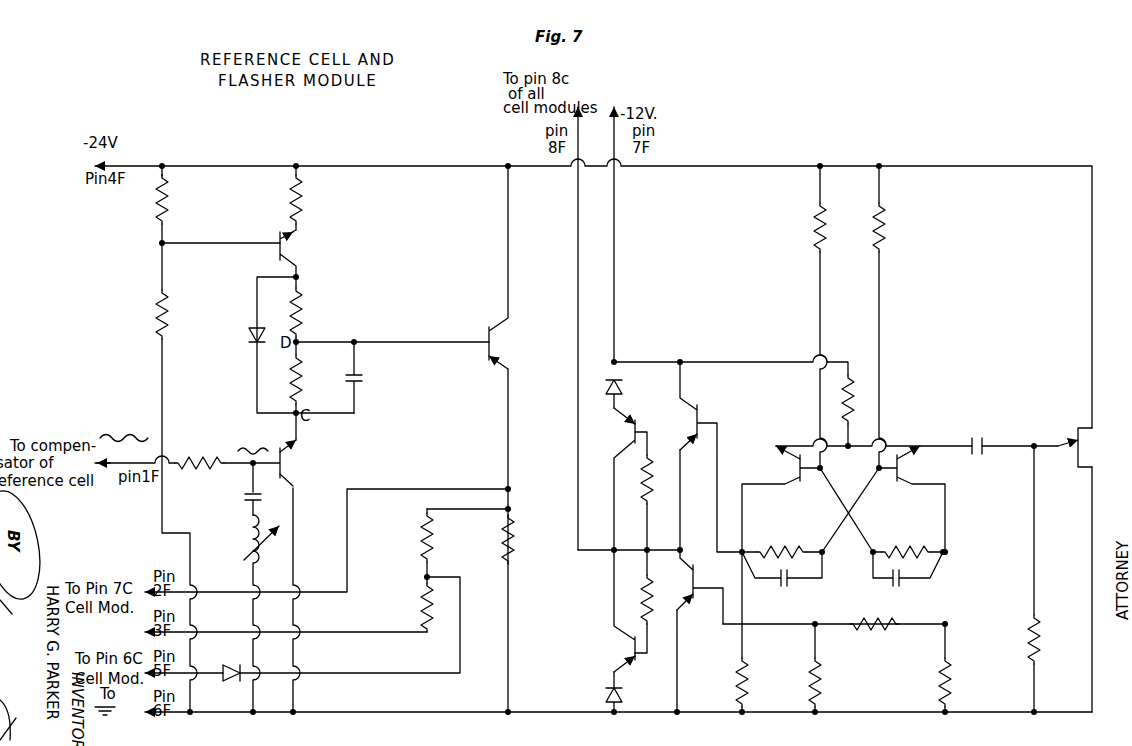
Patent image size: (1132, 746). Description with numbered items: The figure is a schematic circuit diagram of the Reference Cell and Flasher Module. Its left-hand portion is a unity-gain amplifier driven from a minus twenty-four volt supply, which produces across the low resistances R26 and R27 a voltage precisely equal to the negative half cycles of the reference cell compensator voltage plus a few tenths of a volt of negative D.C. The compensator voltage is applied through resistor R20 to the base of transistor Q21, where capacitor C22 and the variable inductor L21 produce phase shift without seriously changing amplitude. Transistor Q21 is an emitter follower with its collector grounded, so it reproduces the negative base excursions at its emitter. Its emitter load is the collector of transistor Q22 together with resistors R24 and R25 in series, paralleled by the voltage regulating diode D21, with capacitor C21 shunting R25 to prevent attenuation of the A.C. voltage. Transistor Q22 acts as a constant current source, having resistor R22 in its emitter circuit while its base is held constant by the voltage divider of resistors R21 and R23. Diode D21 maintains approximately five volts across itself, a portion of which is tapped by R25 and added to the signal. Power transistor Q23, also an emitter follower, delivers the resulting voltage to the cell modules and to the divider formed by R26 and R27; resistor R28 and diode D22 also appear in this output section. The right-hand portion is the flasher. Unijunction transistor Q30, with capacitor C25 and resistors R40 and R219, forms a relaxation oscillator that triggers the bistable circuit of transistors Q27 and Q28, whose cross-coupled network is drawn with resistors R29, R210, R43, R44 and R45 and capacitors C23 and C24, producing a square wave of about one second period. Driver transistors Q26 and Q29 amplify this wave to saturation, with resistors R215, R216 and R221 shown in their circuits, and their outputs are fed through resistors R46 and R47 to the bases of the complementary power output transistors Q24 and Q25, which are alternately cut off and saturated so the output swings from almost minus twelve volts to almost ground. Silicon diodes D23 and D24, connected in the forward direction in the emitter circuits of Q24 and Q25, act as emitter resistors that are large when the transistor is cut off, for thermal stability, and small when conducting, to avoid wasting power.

The resistor R20 is at (204, 459).
The resistor R21 is at (166, 190).
The resistor R22 is at (304, 191).
The resistor R23 is at (175, 314).
The resistor R24 is at (312, 314).
The resistor R25 is at (284, 380).
The resistor R26 is at (418, 544).
The resistor R27 is at (419, 613).
The resistor 180 ohm R28 is at (494, 540).
The resistor 100K R29 is at (804, 224).
The resistor 100K R210 is at (883, 224).
The resistor R40 is at (855, 408).
The resistor 56K R43 is at (753, 554).
The resistor 56K R44 is at (891, 554).
The resistor 6.8K R45 is at (866, 636).
The resistor R46 is at (650, 480).
The resistor R47 is at (640, 596).
The resistor 3.3K R215 is at (748, 676).
The resistor 3.3K R216 is at (950, 674).
The resistor R219 is at (1038, 648).
The resistor 470 ohm R221 is at (823, 676).
The capacitor C21 is at (370, 387).
The capacitor C22 is at (238, 494).
The capacitor .05MFD C23 is at (788, 584).
The capacitor .05MFD C24 is at (898, 585).
The capacitor C25 is at (985, 442).
The voltage regulating diode D21 is at (240, 335).
The diode IN91 D22 is at (226, 671).
The diode D23 is at (620, 380).
The diode D24 is at (602, 690).
The variable inductor L21 is at (249, 613).
The transistor Q21 is at (298, 456).
The transistor Q22 is at (310, 251).
The power transistor Q23 is at (525, 439).
The power output transistor Q24 is at (624, 440).
The power output transistor Q25 is at (620, 648).
The driver transistor Q26 is at (700, 417).
The transistor Q27 is at (776, 495).
The transistor Q28 is at (903, 444).
The driver transistor Q29 is at (714, 598).
The unijunction transistor Q30 is at (1100, 453).